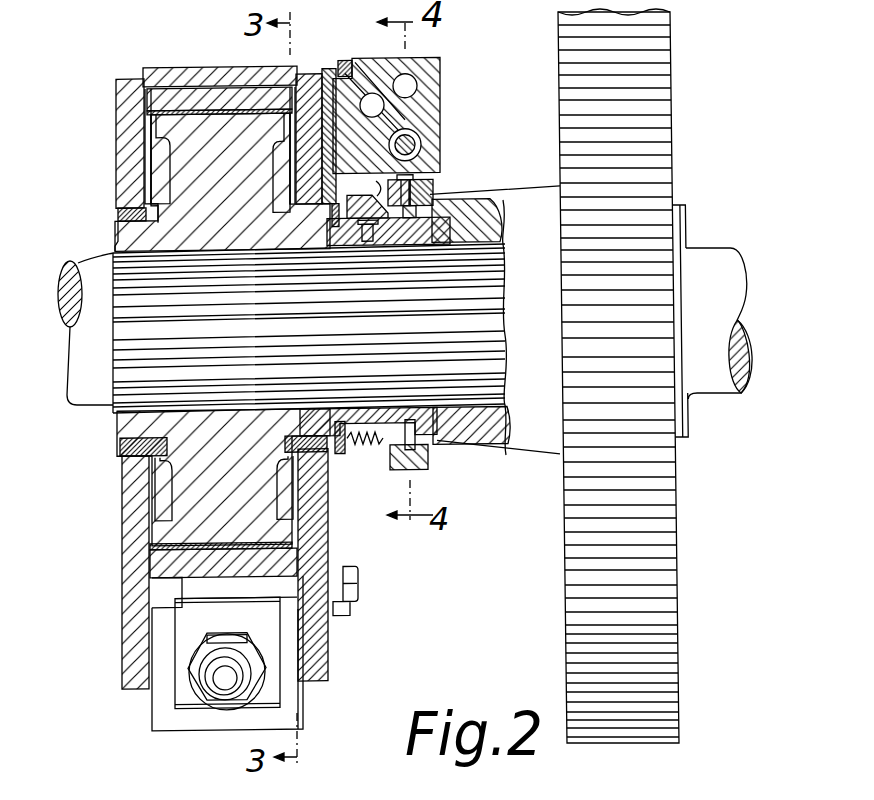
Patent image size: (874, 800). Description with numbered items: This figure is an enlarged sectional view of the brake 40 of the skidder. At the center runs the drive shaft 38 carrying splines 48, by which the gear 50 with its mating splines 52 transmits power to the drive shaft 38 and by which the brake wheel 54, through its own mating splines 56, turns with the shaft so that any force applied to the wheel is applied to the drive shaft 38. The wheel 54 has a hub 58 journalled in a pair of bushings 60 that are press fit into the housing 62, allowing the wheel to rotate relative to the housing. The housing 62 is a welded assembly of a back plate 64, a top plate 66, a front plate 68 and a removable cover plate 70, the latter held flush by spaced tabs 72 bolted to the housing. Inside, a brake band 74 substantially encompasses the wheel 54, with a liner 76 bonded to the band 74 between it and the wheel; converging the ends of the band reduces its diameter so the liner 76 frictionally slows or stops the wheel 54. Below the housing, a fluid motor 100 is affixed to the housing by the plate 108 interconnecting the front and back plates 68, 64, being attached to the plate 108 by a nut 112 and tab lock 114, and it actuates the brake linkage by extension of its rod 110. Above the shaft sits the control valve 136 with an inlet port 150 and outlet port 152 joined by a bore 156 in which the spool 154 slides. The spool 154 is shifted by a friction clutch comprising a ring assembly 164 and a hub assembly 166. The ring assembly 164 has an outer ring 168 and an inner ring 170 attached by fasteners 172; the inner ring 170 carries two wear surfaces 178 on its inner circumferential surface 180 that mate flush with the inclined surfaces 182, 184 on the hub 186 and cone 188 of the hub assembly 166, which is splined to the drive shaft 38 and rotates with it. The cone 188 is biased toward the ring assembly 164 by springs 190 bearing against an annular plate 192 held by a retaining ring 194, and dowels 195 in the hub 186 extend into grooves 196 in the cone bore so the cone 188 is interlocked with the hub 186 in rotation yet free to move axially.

The drive shaft 38 is at (66, 283).
The brake 40 is at (82, 551).
The splines 48 is at (110, 393).
The gear 50 is at (655, 150).
The mating splines 52 is at (510, 407).
The brake wheel 54 is at (182, 155).
The mating splines 56 is at (133, 417).
The hub 58 is at (115, 236).
The bushings 60 is at (125, 213).
The housing 62 is at (125, 71).
The back plate 64 is at (125, 114).
The top plate 66 is at (160, 72).
The front plate 68 is at (300, 75).
The cover plate 70 is at (326, 105).
The tab 72 is at (350, 607).
The brake band 74 is at (192, 99).
The liner 76 is at (228, 110).
The fluid motor 100 is at (183, 590).
The plate 108 is at (163, 707).
The rod 110 is at (224, 692).
The nut 112 is at (230, 637).
The tab lock 114 is at (183, 652).
The control valve 136 is at (446, 71).
The inlet port 150 is at (407, 80).
The outlet port 152 is at (370, 97).
The spool 154 is at (421, 147).
The bore 156 is at (420, 135).
The ring assembly 164 is at (440, 478).
The hub assembly 166 is at (448, 422).
The outer ring 168 is at (428, 188).
The inner ring 170 is at (425, 453).
The fasteners 172 is at (418, 180).
The wear surfaces 178 is at (382, 450).
The inner circumferential surface 180 is at (411, 422).
The inclined surface 182 is at (433, 450).
The inclined surface 184 is at (368, 194).
The hub 186 is at (410, 235).
The cone 188 is at (397, 467).
The springs 190 is at (350, 455).
The annular plate 192 is at (292, 193).
The retaining ring 194 is at (333, 219).
The dowels 195 is at (385, 250).
The grooves 196 is at (367, 244).